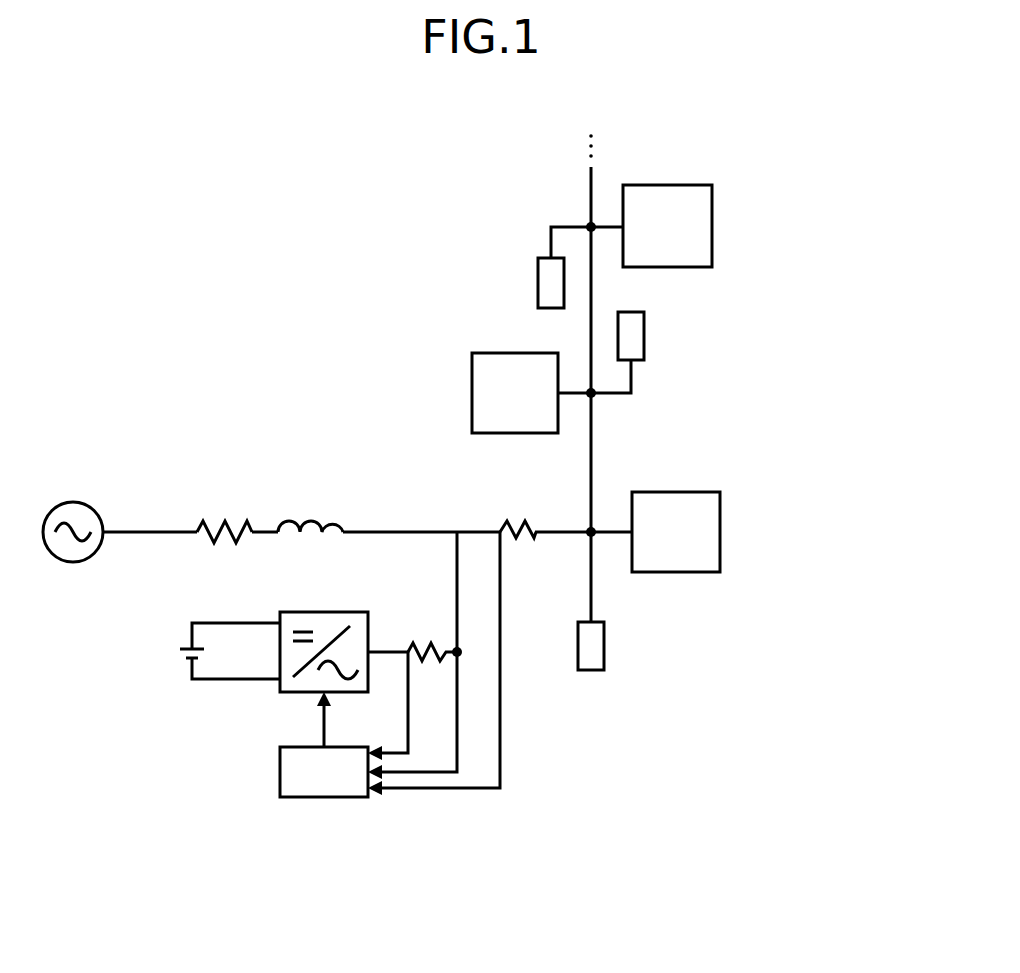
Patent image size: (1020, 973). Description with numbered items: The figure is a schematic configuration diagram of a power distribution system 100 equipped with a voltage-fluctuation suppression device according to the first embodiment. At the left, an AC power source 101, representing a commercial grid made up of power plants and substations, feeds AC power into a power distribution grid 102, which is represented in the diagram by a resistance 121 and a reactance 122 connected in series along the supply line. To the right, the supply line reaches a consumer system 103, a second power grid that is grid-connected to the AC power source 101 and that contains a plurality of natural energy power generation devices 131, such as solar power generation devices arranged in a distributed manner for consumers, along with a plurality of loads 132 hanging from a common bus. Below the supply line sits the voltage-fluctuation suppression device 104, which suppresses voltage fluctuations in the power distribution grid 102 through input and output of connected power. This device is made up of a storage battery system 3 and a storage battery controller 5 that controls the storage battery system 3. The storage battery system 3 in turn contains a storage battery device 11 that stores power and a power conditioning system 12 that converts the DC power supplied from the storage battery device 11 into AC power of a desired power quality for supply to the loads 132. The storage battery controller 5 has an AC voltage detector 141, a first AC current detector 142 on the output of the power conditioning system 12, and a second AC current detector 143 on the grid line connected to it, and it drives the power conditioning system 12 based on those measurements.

The power distribution system 100 is at (256, 324).
The AC power source 101 is at (73, 502).
The power distribution grid 102 is at (342, 441).
The resistance 121 is at (222, 502).
The reactance 122 is at (310, 502).
The consumer system 103 is at (823, 288).
The natural energy power generation device 131 is at (712, 227).
The load 132 is at (538, 283).
The voltage-fluctuation suppression device 104 is at (538, 763).
The AC voltage detector 141 is at (450, 660).
The first AC current detector 142 is at (418, 642).
The second AC current detector 143 is at (516, 538).
The storage battery system 3 is at (188, 780).
The storage battery device 11 is at (185, 661).
The power conditioning system 12 is at (294, 694).
The storage battery controller 5 is at (327, 799).